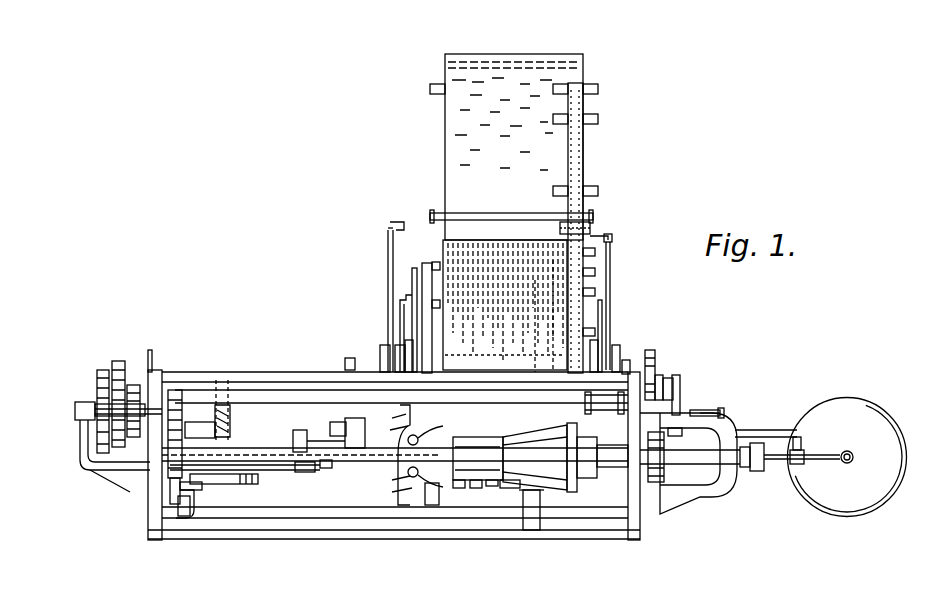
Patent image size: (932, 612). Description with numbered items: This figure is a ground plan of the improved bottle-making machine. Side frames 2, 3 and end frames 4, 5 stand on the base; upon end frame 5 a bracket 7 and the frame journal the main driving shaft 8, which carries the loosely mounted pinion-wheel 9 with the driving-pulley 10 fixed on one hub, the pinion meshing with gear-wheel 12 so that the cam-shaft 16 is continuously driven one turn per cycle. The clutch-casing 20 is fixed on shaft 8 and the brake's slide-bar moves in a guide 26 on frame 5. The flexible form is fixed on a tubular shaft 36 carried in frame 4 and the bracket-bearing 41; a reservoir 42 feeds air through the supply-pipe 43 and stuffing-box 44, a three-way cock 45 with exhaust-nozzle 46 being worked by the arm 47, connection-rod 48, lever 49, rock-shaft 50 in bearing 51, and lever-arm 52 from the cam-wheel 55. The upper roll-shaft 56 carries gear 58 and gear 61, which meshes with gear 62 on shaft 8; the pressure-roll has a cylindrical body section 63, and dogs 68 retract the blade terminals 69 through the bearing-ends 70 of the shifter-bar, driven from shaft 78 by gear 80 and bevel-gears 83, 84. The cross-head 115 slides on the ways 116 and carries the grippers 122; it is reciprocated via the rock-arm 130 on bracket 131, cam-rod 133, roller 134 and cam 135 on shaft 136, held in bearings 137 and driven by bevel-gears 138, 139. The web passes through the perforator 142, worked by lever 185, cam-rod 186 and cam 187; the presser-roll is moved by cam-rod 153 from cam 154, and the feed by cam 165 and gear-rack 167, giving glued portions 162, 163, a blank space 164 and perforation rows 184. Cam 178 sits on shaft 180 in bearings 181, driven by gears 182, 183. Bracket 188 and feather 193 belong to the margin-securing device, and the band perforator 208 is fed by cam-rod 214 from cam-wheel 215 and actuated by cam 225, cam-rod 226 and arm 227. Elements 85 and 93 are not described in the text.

The side frame 2 is at (478, 539).
The side frame 3 is at (395, 368).
The end frame 4 is at (640, 528).
The end frame 5 is at (148, 515).
The bracket 7 is at (86, 470).
The main driving shaft 8 is at (75, 412).
The pinion-wheel 9 is at (115, 405).
The driving-pulley 10 is at (103, 375).
The gear-wheel 12 is at (118, 440).
The cam-shaft 16 is at (275, 403).
The clutch-casing 20 is at (134, 419).
The guide 26 is at (153, 356).
The tubular shaft 36 is at (694, 464).
The bracket-bearing 41 is at (702, 497).
The reservoir 42 is at (847, 457).
The supply-pipe 43 is at (845, 451).
The stuffing-box 44 is at (752, 471).
The three-way cock 45 is at (800, 459).
The exhaust-nozzle 46 is at (793, 464).
The arm 47 is at (804, 445).
The connection-rod 48 is at (768, 430).
The lever 49 is at (683, 437).
The rock-shaft 50 is at (716, 413).
The bearing 51 is at (724, 410).
The lever-arm 52 is at (700, 410).
The cam-wheel 55 is at (680, 378).
The upper roll-shaft 56 is at (339, 471).
The gear 58 is at (655, 482).
The gear 61 is at (172, 495).
The gear 62 is at (176, 390).
The body section 63 is at (478, 458).
The dog 68 is at (590, 478).
The blade terminals 69 is at (572, 492).
The bearing-ends 70 is at (610, 468).
The shaft 78 is at (523, 512).
The gear 80 is at (476, 490).
The bevel-gear 83 is at (491, 491).
The bevel-gear 84 is at (508, 488).
The column 85 is at (427, 263).
The block 93 is at (462, 493).
The cross-head 115 is at (402, 488).
The ways 116 is at (338, 403).
The grippers 122 is at (418, 476).
The rock-arm 130 is at (317, 440).
The bracket 131 is at (366, 424).
The cam-rod 133 is at (300, 472).
The roller 134 is at (262, 475).
The cam 135 is at (254, 484).
The shaft 136 is at (198, 492).
The bearings 137 is at (176, 525).
The bevel-gear 138 is at (200, 426).
The gear 139 is at (230, 427).
The perforator 142 is at (432, 213).
The cam-rod 153 is at (400, 312).
The cam 154 is at (396, 350).
The glued portion 162 is at (480, 366).
The glued portion 163 is at (452, 340).
The blank initial space 164 is at (537, 326).
The cam 165 is at (406, 344).
The gear-rack 167 is at (412, 280).
The cam 178 is at (597, 345).
The shaft 180 is at (656, 365).
The bearings 181 is at (632, 360).
The driving-gear 182 is at (655, 352).
The gear 183 is at (666, 387).
The row of perforations 184 is at (556, 366).
The lever 185 is at (390, 222).
The cam-rod 186 is at (388, 239).
The cam 187 is at (381, 352).
The bracket 188 is at (431, 496).
The feather 193 is at (627, 395).
The perforator 208 is at (592, 226).
The cam-rod 214 is at (590, 345).
The cam-wheel 215 is at (604, 345).
The cam 225 is at (620, 350).
The cam-rod 226 is at (611, 276).
The arm 227 is at (612, 238).